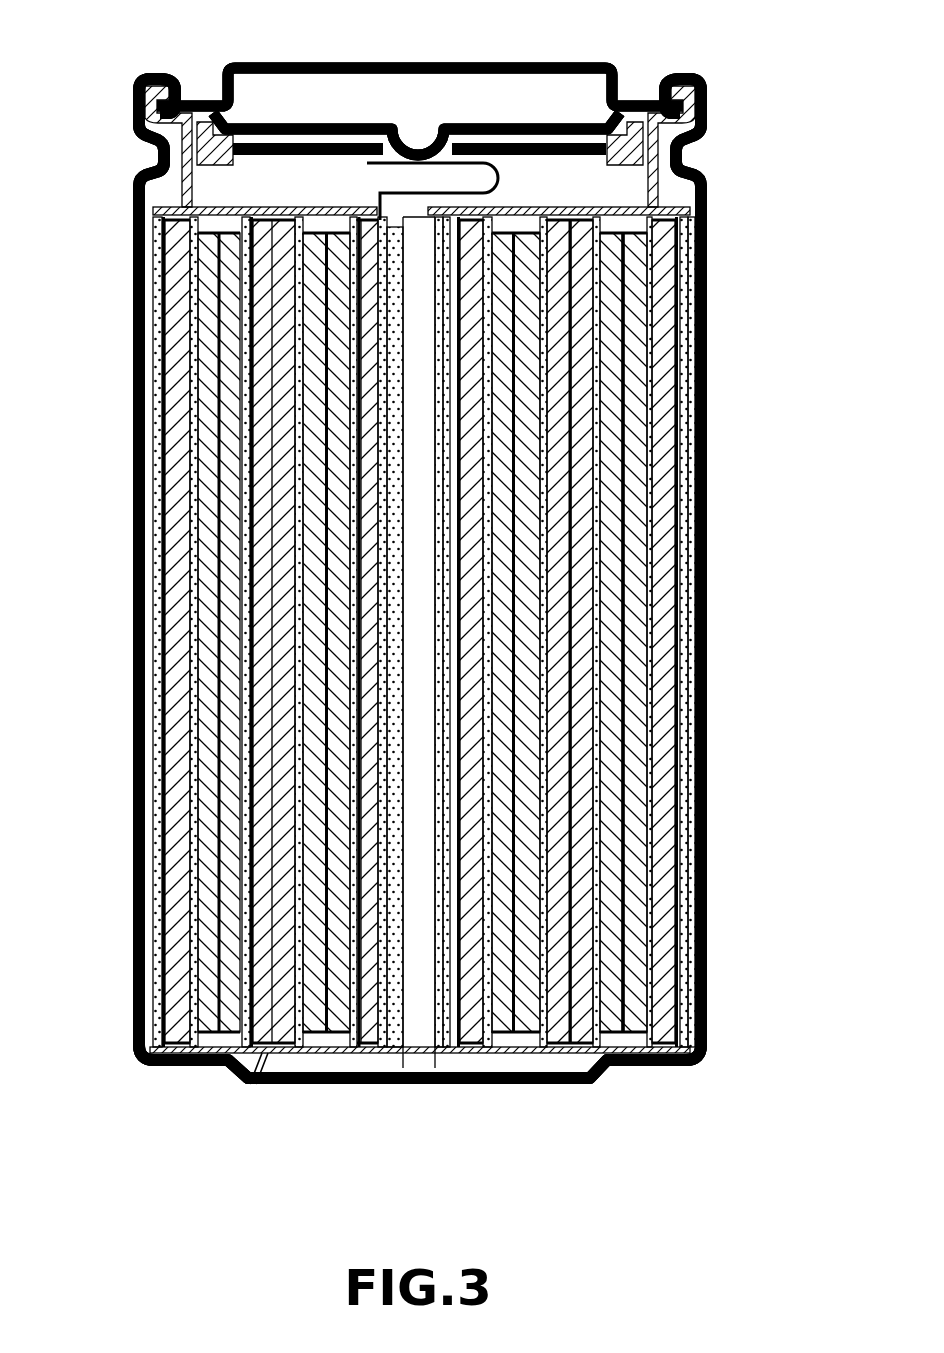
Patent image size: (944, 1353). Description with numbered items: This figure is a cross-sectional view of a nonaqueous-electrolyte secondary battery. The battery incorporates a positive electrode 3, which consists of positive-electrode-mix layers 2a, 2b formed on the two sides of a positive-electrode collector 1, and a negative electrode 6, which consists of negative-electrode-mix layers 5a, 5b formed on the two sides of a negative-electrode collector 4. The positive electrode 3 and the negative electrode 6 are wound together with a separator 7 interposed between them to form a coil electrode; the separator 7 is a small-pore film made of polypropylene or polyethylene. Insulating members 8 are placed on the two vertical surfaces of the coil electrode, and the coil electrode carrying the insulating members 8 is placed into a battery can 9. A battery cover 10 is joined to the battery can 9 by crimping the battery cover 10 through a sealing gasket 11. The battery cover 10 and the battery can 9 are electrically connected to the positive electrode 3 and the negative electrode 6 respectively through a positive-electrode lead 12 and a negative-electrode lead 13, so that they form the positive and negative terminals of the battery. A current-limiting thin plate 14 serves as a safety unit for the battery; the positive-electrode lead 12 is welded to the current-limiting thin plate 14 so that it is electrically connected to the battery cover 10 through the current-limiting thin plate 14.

The positive-electrode collector 1 is at (576, 592).
The positive-electrode-mix layer 2a is at (556, 566).
The positive-electrode-mix layer 2b is at (581, 633).
The positive electrode 3 is at (507, 632).
The negative-electrode collector 4 is at (624, 414).
The negative-electrode-mix layer 5a is at (611, 393).
The negative-electrode-mix layer 5b is at (638, 462).
The negative electrode 6 is at (525, 632).
The separator 7 is at (657, 762).
The insulating member 8 is at (702, 196).
The battery can 9 is at (140, 462).
The battery cover 10 is at (330, 63).
The sealing gasket 11 is at (150, 147).
The positive-electrode lead 12 is at (492, 188).
The negative-electrode lead 13 is at (260, 1072).
The current-limiting thin plate 14 is at (421, 136).